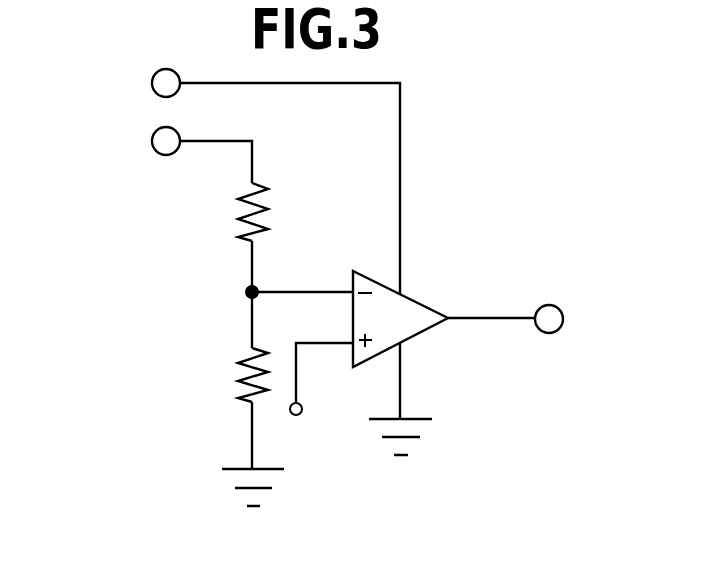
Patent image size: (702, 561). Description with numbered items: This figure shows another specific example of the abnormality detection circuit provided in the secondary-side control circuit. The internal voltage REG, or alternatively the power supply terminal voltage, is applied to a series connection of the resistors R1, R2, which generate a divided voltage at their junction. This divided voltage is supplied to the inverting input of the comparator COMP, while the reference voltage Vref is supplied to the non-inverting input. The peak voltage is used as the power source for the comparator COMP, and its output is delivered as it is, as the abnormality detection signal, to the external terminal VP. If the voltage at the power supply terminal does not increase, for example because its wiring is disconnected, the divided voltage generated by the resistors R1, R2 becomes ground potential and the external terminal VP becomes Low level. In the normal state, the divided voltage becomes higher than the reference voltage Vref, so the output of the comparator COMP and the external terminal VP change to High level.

The internal voltage REG is at (156, 155).
The resistor R1 is at (234, 265).
The resistor R2 is at (243, 427).
The comparator COMP is at (417, 300).
The reference voltage Vref is at (316, 395).
The external terminal VP is at (524, 319).